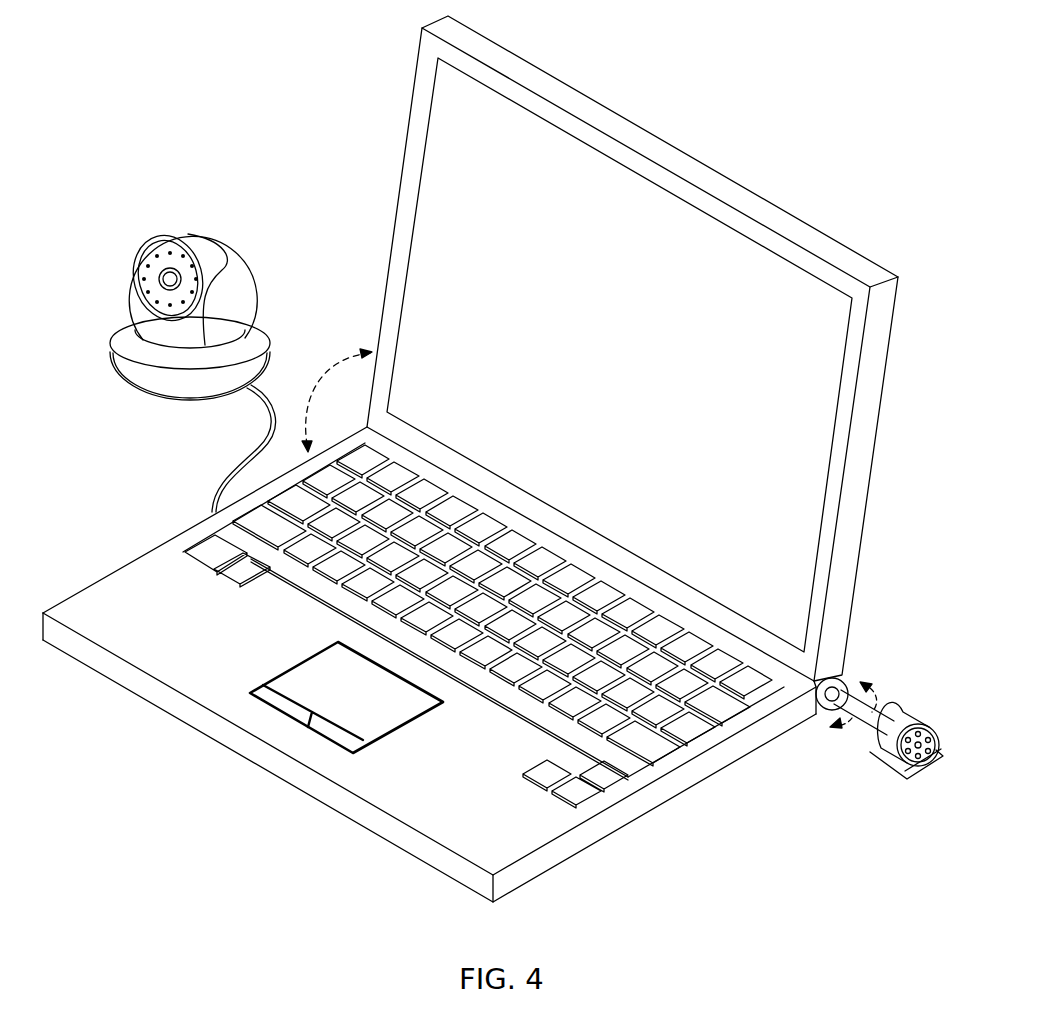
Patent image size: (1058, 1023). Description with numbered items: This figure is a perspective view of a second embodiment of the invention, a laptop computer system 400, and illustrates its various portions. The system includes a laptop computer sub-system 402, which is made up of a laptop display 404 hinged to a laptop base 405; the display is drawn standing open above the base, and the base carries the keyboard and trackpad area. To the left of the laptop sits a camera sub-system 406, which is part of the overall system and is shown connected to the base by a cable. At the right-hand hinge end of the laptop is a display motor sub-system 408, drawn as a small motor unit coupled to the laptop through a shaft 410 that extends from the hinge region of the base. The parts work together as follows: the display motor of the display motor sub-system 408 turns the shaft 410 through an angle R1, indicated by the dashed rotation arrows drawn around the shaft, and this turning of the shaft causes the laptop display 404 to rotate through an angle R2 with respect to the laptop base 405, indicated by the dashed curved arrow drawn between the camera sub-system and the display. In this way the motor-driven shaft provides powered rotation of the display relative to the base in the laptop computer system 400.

The laptop computer system 400 is at (245, 116).
The laptop computer sub-system 402 is at (504, 459).
The laptop display 404 is at (650, 130).
The laptop base 405 is at (625, 815).
The camera sub-system 406 is at (150, 228).
The display motor sub-system 408 is at (890, 770).
The shaft 410 is at (852, 733).
The shaft rotation angle R1 is at (870, 700).
The display rotation angle R2 is at (330, 368).